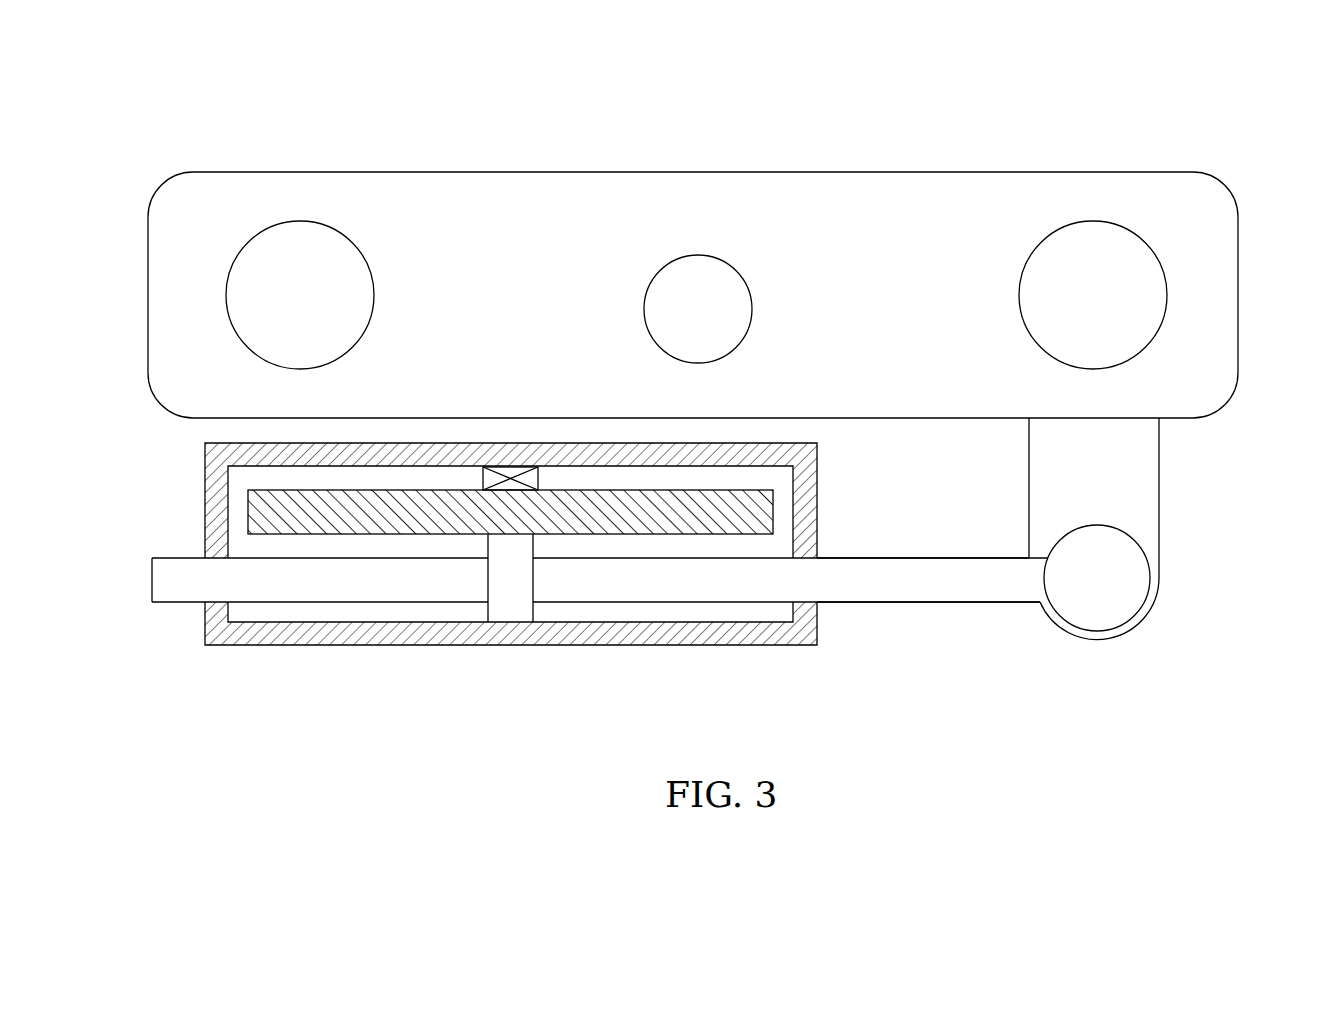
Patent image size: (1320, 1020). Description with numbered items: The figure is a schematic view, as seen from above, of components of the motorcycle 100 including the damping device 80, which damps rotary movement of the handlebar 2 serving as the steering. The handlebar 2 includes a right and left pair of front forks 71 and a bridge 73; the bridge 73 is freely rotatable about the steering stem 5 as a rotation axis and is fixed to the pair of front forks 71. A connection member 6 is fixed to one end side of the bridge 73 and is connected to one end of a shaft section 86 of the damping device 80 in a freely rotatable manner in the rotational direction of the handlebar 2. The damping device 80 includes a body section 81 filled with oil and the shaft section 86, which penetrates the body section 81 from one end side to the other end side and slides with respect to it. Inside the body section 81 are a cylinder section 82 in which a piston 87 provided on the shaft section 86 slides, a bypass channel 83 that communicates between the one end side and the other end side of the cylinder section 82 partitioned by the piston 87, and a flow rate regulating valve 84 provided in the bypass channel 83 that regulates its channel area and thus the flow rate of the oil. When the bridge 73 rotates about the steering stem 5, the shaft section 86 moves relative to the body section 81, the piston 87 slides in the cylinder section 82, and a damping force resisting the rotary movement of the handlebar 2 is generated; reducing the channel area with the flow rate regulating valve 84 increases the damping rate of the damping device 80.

The motorcycle 100 is at (189, 101).
The handlebar 2 is at (832, 131).
The steering stem 5 is at (721, 280).
The front forks 71 is at (307, 280).
The bridge 73 is at (1213, 290).
The connection member 6 is at (1133, 490).
The damping device 80 is at (718, 669).
The body section 81 is at (246, 649).
The cylinder section 82 is at (436, 609).
The bypass channel 83 is at (317, 480).
The flow rate regulating valve 84 is at (512, 472).
The shaft section 86 is at (916, 607).
The piston 87 is at (501, 605).